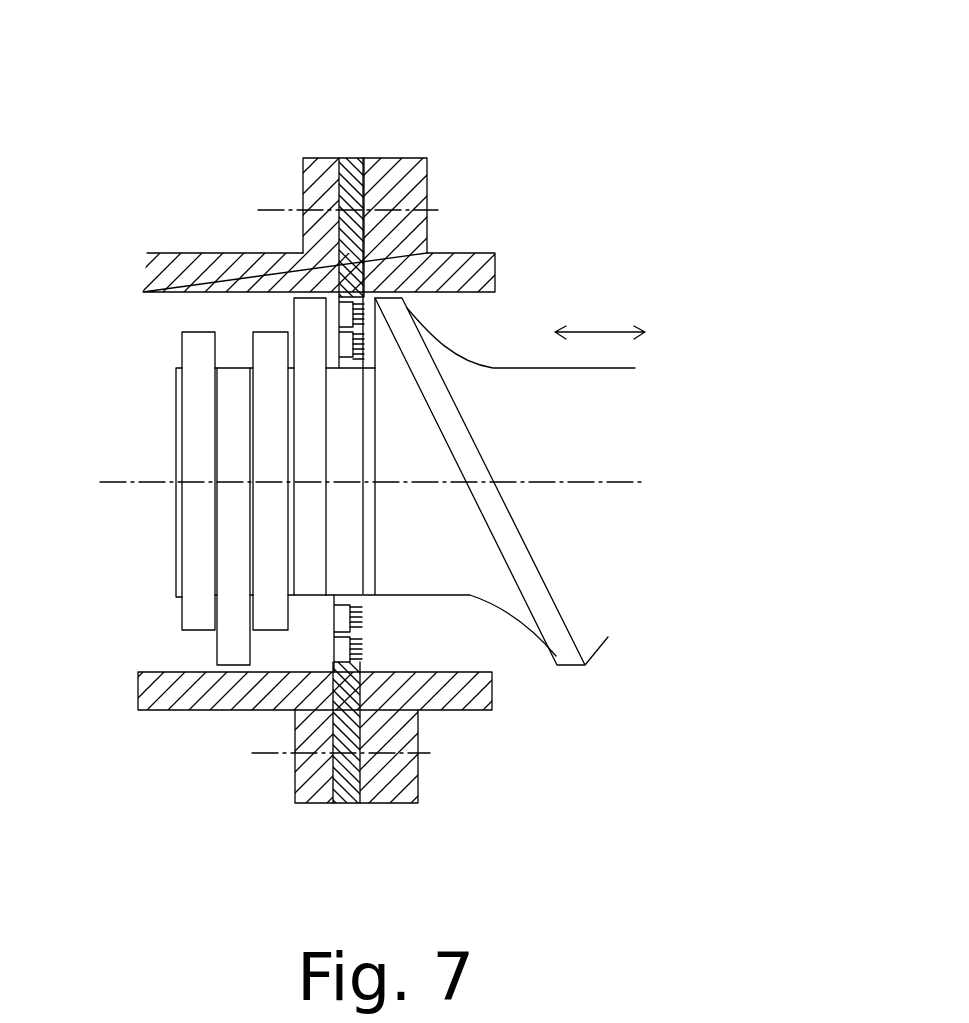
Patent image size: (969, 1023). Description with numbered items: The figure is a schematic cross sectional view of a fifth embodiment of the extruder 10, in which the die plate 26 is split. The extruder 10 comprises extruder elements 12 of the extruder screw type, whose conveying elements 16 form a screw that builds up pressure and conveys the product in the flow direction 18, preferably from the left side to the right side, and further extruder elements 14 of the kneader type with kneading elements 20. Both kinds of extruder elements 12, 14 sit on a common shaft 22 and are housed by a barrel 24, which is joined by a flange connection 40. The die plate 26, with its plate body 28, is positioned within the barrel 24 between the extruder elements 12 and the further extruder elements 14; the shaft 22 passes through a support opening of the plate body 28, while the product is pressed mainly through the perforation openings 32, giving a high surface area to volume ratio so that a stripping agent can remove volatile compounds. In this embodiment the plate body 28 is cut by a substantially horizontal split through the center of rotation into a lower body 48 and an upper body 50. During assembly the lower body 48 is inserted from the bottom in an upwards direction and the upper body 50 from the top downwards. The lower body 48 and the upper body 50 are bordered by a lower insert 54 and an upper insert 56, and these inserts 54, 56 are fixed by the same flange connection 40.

The extruder 10 is at (130, 100).
The extruder elements 12 is at (590, 435).
The further extruder elements 14 is at (176, 430).
The conveying elements 16 is at (520, 570).
The flow direction 18 is at (607, 325).
The kneading elements 20 is at (198, 349).
The common shaft 22 is at (363, 542).
The barrel 24 is at (495, 265).
The die plate 26 is at (357, 481).
The plate body 28 is at (148, 253).
The perforation openings 32 is at (297, 690).
The flange connection 40 is at (277, 210).
The lower body 48 is at (343, 650).
The upper body 50 is at (359, 281).
The lower insert 54 is at (347, 777).
The upper insert 56 is at (359, 192).